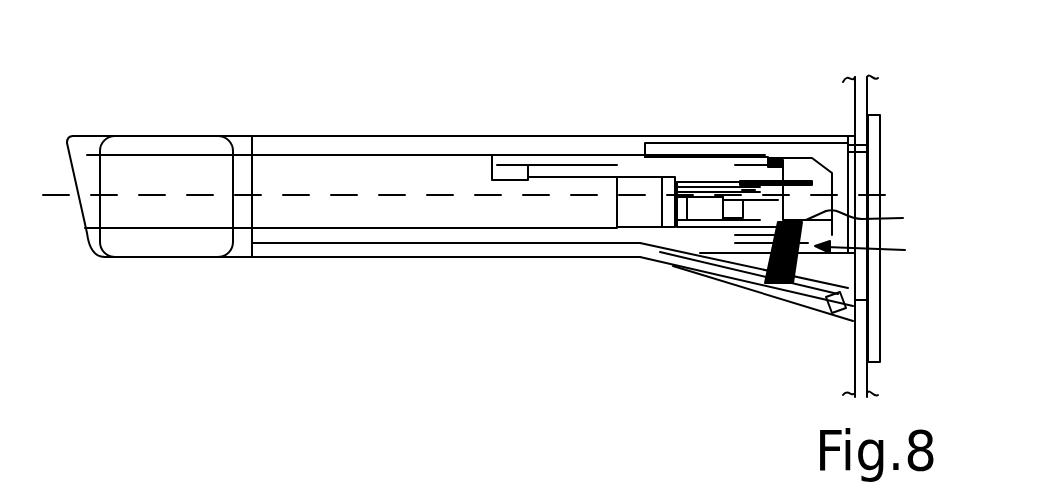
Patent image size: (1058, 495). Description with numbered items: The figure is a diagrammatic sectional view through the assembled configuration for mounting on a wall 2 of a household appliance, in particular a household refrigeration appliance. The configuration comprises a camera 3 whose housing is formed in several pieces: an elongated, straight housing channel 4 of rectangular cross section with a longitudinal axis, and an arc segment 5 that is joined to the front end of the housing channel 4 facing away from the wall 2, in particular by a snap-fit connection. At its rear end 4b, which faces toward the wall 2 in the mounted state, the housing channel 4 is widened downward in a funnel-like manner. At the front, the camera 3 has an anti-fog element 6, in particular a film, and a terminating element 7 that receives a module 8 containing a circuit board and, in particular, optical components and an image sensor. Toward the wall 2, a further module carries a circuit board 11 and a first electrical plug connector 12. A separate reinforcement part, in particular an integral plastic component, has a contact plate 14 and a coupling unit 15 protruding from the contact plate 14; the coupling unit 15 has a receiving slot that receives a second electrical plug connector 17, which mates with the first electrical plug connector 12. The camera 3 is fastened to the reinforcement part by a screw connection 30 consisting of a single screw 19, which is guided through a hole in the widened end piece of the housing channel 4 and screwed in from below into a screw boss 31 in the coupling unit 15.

The wall 2 is at (862, 104).
The camera 3 is at (485, 268).
The housing channel 4 is at (410, 136).
The rear end 4b is at (823, 300).
The arc segment 5 is at (130, 134).
The anti-fog element 6 is at (163, 185).
The terminating element 7 is at (166, 196).
The module 8 is at (166, 196).
The circuit board 11 is at (625, 176).
The first electrical plug connector 12 is at (698, 208).
The contact plate 14 is at (873, 155).
The coupling unit 15 is at (808, 176).
The second electrical plug connector 17 is at (772, 205).
The screw 19 is at (795, 262).
The screw connection 30 is at (872, 213).
The screw boss 31 is at (878, 253).